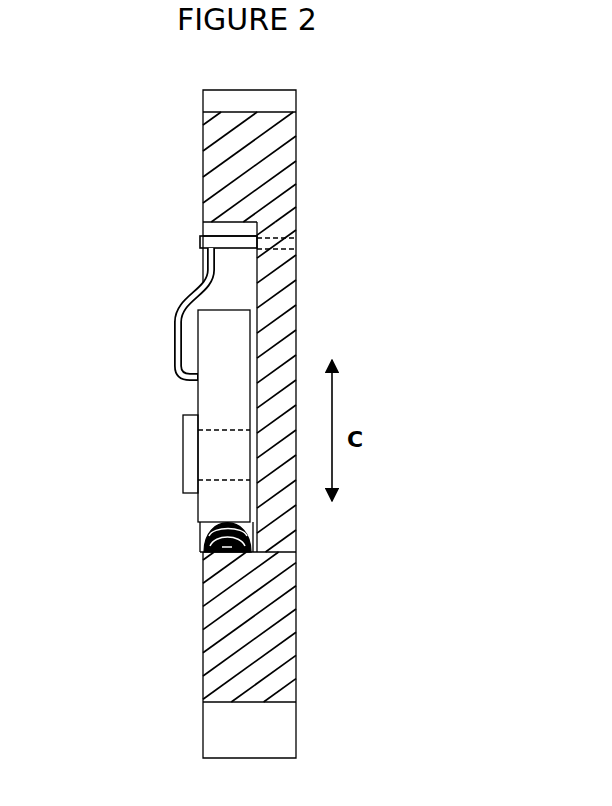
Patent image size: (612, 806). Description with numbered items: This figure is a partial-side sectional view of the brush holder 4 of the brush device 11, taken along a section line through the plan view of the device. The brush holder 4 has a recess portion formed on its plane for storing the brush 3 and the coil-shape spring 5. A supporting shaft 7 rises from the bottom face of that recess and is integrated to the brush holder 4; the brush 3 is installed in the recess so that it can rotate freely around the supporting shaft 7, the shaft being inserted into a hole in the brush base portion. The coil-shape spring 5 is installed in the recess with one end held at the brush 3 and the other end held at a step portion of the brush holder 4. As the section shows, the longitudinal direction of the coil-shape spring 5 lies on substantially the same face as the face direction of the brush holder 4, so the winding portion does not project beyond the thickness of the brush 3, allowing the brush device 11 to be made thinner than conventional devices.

The brush holder 4 is at (243, 158).
The brush 3 is at (223, 363).
The supporting shaft 7 is at (183, 448).
The coil-shape spring 5 is at (199, 546).
The brush device 11 is at (337, 146).